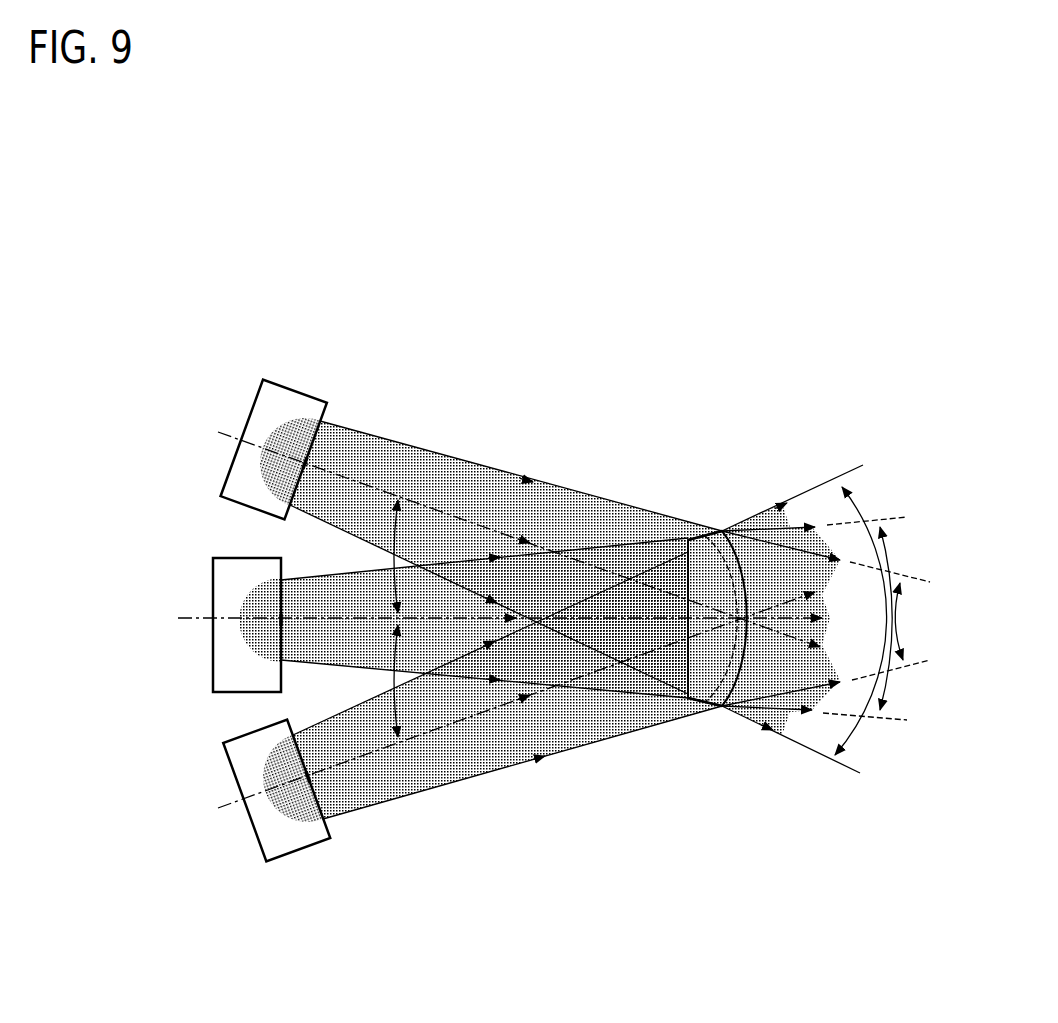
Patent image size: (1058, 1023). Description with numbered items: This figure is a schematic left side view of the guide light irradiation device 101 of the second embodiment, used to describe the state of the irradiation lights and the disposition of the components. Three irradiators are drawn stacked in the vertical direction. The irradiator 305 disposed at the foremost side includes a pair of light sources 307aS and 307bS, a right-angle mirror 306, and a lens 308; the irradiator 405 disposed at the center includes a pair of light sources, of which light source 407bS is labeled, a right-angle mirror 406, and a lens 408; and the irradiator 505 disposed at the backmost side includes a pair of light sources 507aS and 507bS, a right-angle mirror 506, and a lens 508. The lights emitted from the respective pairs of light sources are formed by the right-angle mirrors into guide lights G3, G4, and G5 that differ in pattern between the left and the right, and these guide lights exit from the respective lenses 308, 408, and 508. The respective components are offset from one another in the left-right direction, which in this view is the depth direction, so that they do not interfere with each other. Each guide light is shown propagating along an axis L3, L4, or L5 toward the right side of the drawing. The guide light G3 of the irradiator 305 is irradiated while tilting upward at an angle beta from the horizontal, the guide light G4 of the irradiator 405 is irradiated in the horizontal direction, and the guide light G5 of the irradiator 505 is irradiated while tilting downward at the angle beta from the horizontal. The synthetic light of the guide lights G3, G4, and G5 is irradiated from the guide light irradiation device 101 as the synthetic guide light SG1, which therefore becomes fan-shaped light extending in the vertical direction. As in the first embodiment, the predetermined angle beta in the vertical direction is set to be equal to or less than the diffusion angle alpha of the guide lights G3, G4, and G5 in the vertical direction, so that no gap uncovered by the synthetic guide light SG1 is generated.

The guide light irradiation device 101 is at (74, 233).
The irradiator 305 is at (284, 799).
The right-angle mirror 306 is at (250, 760).
The light source 307bS is at (408, 825).
The light source 307aS is at (308, 777).
The lens 308 is at (725, 707).
The irradiator 405 is at (156, 603).
The right-angle mirror 406 is at (213, 658).
The light source 407bS is at (186, 570).
The lens 408 is at (693, 608).
The irradiator 505 is at (272, 434).
The right-angle mirror 506 is at (272, 408).
The light source 507bS is at (403, 409).
The light source 507aS is at (307, 465).
The lens 508 is at (723, 528).
The guide light G3 is at (638, 742).
The guide light G4 is at (336, 668).
The guide light G5 is at (414, 444).
The first optical axis L3 is at (500, 707).
The second optical axis L4 is at (482, 627).
The third optical axis L5 is at (501, 532).
The synthetic guide light SG1 is at (753, 513).